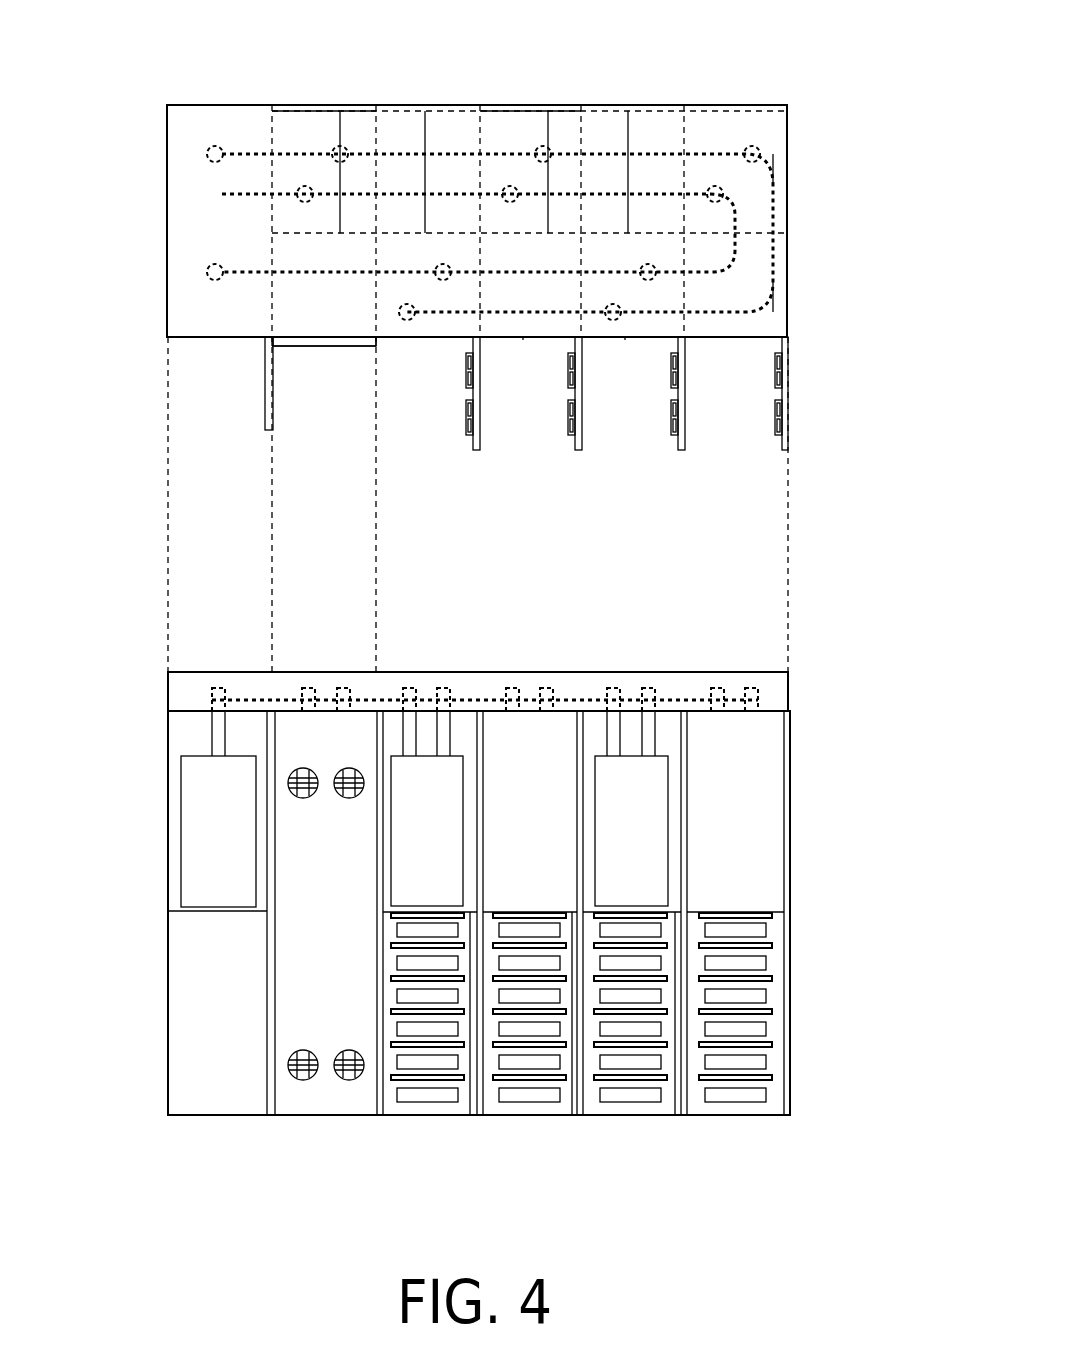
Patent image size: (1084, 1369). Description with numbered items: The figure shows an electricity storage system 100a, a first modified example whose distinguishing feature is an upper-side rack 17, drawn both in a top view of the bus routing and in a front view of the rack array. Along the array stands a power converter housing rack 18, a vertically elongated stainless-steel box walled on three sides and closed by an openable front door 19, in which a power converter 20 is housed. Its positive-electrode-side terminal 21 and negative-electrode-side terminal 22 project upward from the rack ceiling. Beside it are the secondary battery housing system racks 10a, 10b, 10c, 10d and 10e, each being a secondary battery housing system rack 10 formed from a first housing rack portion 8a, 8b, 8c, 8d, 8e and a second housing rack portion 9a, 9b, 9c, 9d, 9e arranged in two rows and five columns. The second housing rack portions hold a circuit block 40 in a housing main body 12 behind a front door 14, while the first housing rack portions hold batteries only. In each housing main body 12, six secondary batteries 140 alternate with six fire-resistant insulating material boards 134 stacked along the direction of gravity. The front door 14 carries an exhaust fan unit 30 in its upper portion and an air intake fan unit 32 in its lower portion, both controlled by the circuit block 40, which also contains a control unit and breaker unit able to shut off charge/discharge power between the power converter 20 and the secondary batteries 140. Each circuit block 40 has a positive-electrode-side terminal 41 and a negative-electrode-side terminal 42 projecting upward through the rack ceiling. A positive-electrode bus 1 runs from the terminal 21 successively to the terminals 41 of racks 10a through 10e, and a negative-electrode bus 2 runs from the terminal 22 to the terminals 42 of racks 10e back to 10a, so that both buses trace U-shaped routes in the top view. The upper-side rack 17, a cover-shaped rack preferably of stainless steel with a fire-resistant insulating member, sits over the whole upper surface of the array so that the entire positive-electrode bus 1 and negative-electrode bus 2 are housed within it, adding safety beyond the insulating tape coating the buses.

The electricity storage system 100a is at (803, 74).
The positive-electrode bus 1 is at (240, 148).
The negative-electrode bus 2 is at (240, 278).
The front door 14 is at (307, 105).
The second housing rack portion 9a is at (340, 108).
The first housing rack portion 8a is at (425, 108).
The secondary battery housing system rack 10a is at (425, 40).
The second housing rack portion 9b is at (548, 108).
The first housing rack portion 8b is at (628, 108).
The secondary battery housing system rack 10b is at (545, 40).
The second housing rack portion 9c is at (787, 200).
The first housing rack portion 8c is at (787, 255).
The secondary battery housing system rack 10c is at (862, 185).
The first housing rack portion 8d is at (523, 340).
The second housing rack portion 9d is at (625, 340).
The secondary battery housing system rack 10d is at (537, 484).
The first housing rack portion 8e is at (297, 340).
The second housing rack portion 9e is at (400, 340).
The secondary battery housing system rack 10e is at (282, 484).
The power converter housing rack 18 is at (178, 120).
The upper-side rack 17 is at (778, 307).
The front door 19 is at (265, 404).
The positive-electrode-side terminal 21 is at (214, 163).
The negative-electrode-side terminal 22 is at (214, 281).
The positive-electrode-side terminal 41 is at (334, 147).
The negative-electrode-side terminal 42 is at (312, 200).
The exhaust fan unit 30 is at (456, 425).
The air intake fan unit 32 is at (303, 1050).
The power converter 20 is at (180, 867).
The circuit block 40 is at (465, 820).
The secondary battery housing system rack 10 is at (806, 862).
The housing main body 12 is at (790, 1092).
The fire-resistant insulating material board 134 is at (392, 1082).
The secondary battery 140 is at (447, 1102).